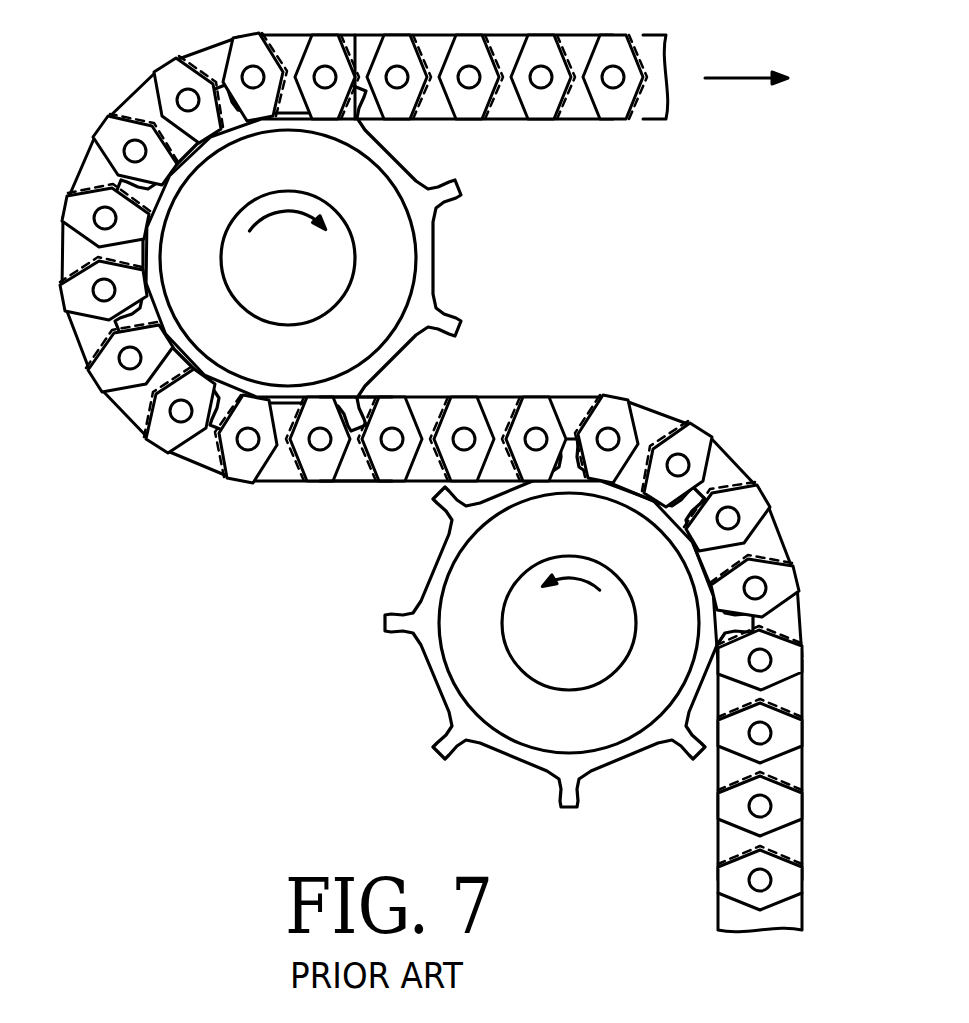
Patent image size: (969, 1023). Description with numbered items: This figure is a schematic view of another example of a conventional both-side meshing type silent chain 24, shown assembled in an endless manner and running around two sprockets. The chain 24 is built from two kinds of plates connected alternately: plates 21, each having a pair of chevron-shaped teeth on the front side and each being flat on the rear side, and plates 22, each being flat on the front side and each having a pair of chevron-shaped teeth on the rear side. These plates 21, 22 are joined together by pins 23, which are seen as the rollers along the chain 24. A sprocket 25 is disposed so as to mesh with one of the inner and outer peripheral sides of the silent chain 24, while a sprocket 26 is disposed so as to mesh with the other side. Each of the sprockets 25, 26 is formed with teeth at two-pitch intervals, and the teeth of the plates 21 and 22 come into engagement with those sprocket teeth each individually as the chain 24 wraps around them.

The plate 21 is at (354, 481).
The plate 22 is at (440, 394).
The pin 23 is at (393, 450).
The both-side meshing type silent chain 24 is at (431, 482).
The sprocket 25 is at (397, 256).
The sprocket 26 is at (473, 649).